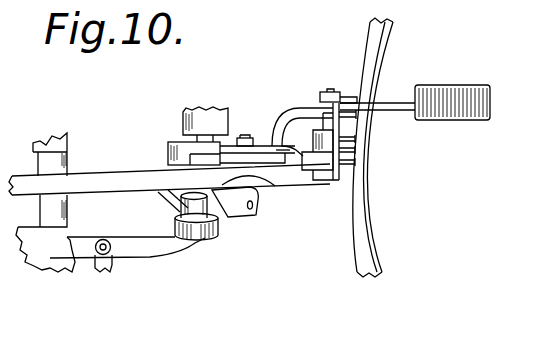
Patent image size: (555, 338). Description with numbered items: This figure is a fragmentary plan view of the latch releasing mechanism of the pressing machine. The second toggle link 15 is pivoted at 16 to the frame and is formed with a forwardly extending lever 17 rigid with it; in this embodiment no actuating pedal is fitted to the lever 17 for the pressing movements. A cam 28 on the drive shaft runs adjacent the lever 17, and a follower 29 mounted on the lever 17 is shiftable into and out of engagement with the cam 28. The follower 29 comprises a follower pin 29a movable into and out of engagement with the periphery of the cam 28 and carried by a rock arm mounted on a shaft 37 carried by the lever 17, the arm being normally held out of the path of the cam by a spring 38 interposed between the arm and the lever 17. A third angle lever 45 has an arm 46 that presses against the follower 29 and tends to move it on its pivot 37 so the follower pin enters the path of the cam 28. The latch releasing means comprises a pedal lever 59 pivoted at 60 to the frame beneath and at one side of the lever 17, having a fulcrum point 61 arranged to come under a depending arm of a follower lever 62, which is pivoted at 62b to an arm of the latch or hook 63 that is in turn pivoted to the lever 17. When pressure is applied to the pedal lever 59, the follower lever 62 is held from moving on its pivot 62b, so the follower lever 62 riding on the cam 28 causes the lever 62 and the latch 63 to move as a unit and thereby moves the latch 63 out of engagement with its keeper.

The second toggle link 15 is at (100, 187).
The pivot 16 is at (52, 211).
The lever 17 is at (312, 168).
The cam 28 is at (166, 152).
The follower 29 is at (217, 222).
The follower pin 29a is at (210, 212).
The shaft 37 is at (262, 210).
The spring 38 is at (268, 182).
The third angle lever 45 is at (111, 264).
The arm 46 is at (160, 247).
The pedal lever 59 is at (391, 117).
The pivot 60 is at (333, 89).
The fulcrum point 61 is at (283, 138).
The follower lever 62 is at (237, 138).
The pivot 62b is at (253, 138).
The latch 63 is at (290, 152).